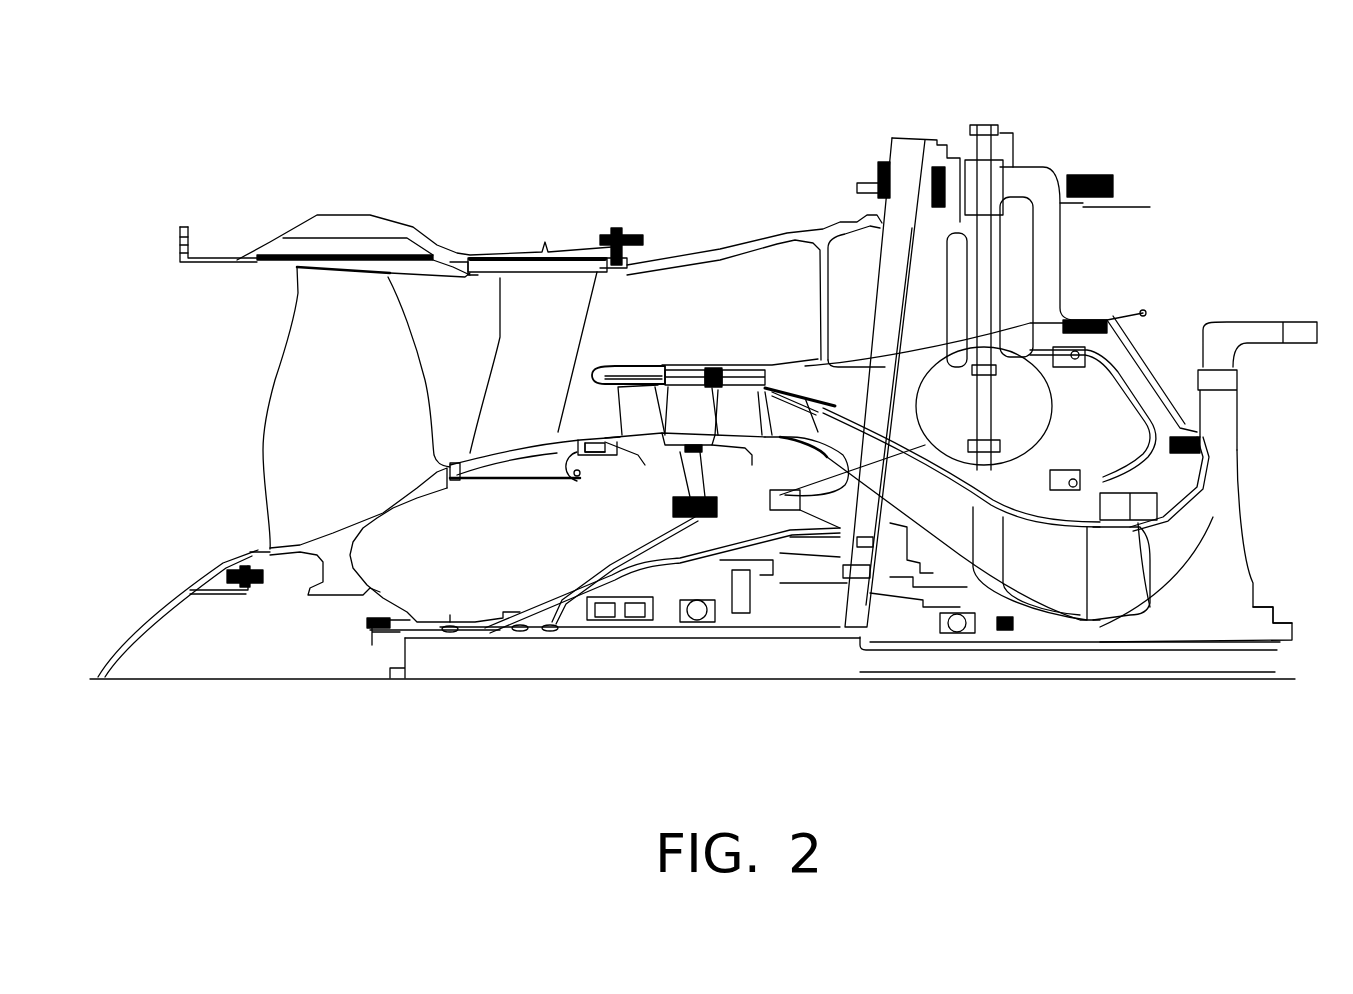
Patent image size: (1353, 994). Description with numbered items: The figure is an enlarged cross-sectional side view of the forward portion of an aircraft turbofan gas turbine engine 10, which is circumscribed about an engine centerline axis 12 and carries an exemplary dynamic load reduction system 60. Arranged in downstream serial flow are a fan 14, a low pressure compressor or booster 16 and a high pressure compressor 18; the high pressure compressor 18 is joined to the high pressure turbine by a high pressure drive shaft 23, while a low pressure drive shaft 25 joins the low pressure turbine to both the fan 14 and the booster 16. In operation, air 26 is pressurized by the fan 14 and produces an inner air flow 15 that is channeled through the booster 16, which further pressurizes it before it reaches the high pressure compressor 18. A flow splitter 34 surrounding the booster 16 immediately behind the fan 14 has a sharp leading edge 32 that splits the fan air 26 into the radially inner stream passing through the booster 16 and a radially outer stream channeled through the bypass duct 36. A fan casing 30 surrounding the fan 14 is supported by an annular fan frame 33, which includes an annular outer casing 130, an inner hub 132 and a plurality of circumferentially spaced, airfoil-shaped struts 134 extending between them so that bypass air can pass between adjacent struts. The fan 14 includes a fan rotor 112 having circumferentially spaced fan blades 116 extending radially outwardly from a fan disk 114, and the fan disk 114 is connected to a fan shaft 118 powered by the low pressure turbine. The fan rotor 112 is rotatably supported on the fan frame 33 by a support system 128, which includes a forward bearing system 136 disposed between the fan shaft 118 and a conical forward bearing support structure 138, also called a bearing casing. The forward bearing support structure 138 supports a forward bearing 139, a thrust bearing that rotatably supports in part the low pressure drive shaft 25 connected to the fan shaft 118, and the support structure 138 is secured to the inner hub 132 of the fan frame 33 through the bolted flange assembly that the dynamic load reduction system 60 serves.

The turbofan gas turbine engine 10 is at (304, 719).
The engine centerline axis 12 is at (471, 682).
The fan 14 is at (343, 285).
The inner air flow 15 is at (636, 410).
The low pressure compressor or booster 16 is at (659, 375).
The high pressure compressor 18 is at (1211, 523).
The high pressure drive shaft 23 is at (1275, 606).
The low pressure drive shaft 25 is at (740, 643).
The air 26 is at (216, 420).
The fan casing 30 is at (462, 244).
The sharp leading edge 32 is at (602, 378).
The fan frame 33 is at (822, 222).
The flow splitter 34 is at (611, 364).
The bypass duct 36 is at (790, 315).
The dynamic load reduction system 60 is at (778, 493).
The fan rotor 112 is at (384, 515).
The fan disk 114 is at (368, 575).
The fan blades 116 is at (366, 375).
The fan shaft 118 is at (453, 614).
The support system 128 is at (630, 558).
The annular outer casing 130 is at (850, 165).
The inner hub 132 is at (826, 325).
The struts 134 is at (827, 268).
The forward bearing system 136 is at (703, 644).
The forward bearing support structure 138 is at (705, 540).
The forward bearing 139 is at (693, 625).